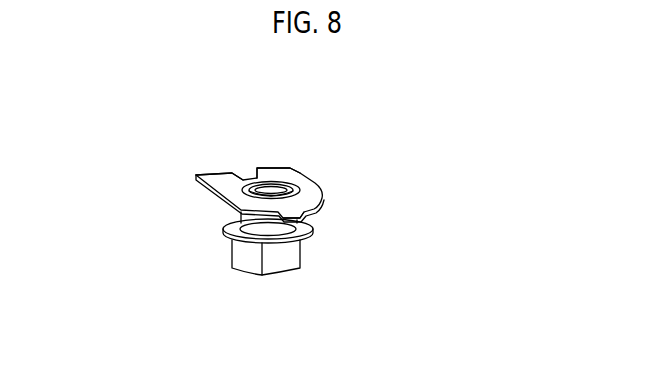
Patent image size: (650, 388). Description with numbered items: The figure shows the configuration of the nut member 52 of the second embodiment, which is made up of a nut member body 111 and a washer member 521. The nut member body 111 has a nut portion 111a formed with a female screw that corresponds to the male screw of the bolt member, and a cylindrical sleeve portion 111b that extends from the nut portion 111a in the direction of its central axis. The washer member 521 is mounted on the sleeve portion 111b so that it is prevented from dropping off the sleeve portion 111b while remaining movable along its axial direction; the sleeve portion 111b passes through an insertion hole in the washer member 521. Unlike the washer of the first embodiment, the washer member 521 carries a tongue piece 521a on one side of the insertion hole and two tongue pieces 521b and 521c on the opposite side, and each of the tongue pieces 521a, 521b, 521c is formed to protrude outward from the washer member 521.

The nut member 52 is at (387, 97).
The washer member 521 is at (307, 185).
The tongue piece 521a is at (308, 219).
The tongue piece 521b is at (281, 169).
The tongue piece 521c is at (210, 176).
The nut member body 111 is at (118, 218).
The nut portion 111a is at (245, 257).
The sleeve portion 111b is at (242, 218).